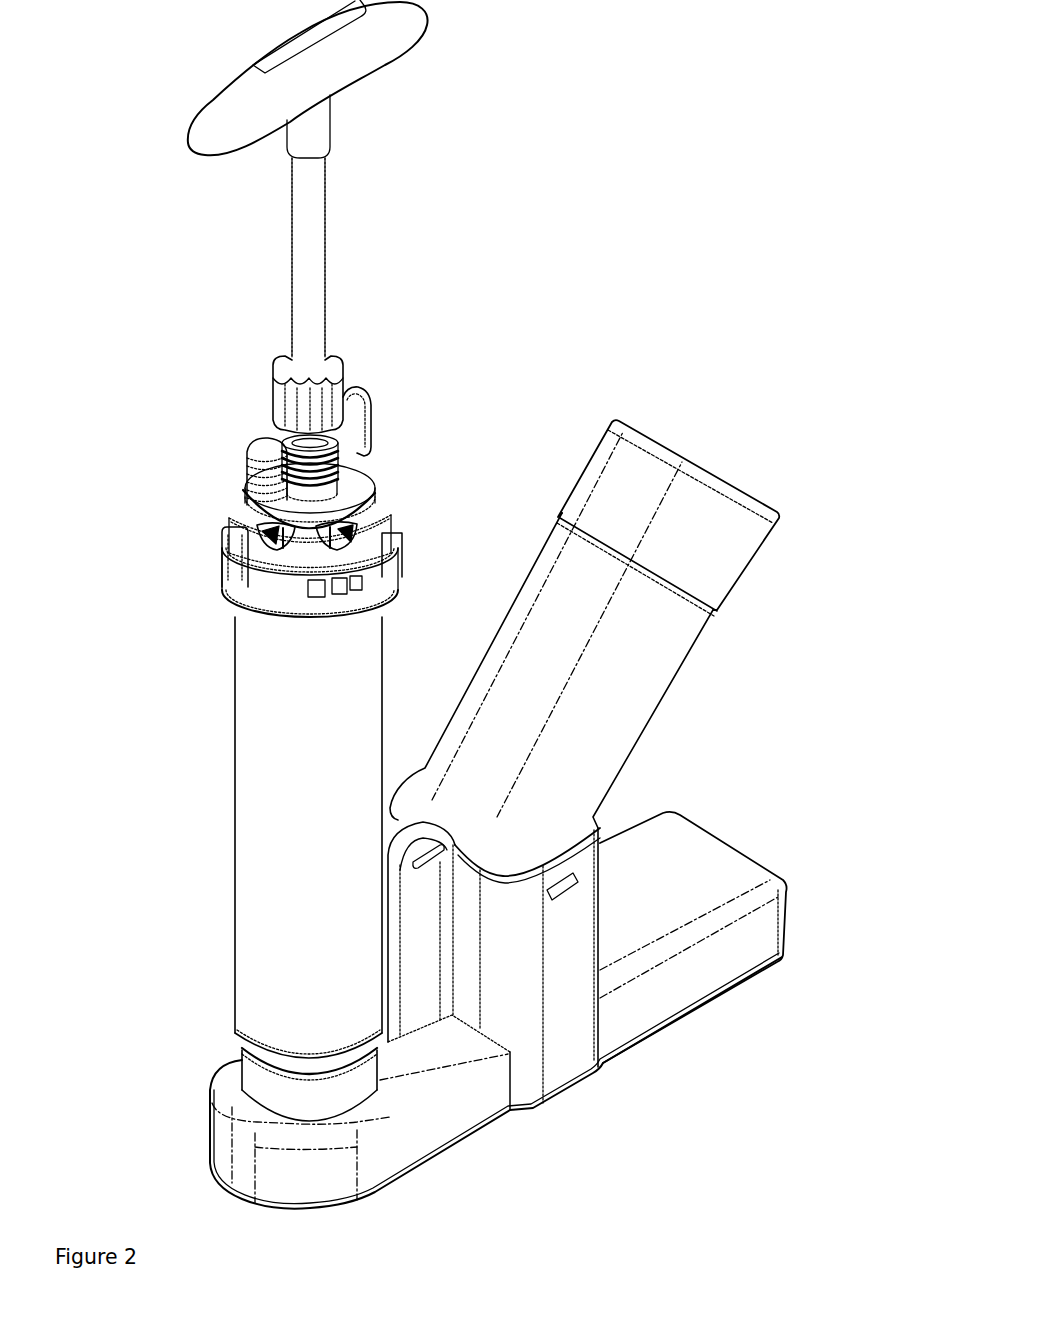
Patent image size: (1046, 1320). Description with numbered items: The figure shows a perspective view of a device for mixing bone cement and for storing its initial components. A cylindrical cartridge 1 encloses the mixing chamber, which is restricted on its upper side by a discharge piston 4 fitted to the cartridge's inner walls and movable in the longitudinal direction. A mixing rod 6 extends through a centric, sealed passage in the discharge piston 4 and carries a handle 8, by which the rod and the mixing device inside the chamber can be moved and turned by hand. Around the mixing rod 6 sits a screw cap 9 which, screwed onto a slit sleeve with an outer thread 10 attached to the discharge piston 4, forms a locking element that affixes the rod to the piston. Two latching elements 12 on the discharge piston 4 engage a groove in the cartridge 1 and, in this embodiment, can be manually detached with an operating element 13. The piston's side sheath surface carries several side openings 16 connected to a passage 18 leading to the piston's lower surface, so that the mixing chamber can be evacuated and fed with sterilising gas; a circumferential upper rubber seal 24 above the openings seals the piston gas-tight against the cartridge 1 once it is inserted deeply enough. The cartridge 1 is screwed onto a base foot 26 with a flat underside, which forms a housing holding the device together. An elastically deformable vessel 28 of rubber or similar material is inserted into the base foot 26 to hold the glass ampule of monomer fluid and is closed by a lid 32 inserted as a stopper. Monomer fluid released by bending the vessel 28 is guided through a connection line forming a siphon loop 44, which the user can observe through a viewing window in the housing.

The cartridge 1 is at (283, 713).
The discharge piston 4 is at (305, 557).
The mixing rod 6 is at (305, 248).
The handle 8 is at (232, 97).
The screw cap 9 is at (293, 401).
The sleeve with outer thread 10 is at (337, 463).
The latching elements 12 is at (257, 477).
The operating element 13 is at (365, 405).
The side openings 16 is at (263, 530).
The passage 18 is at (343, 531).
The upper rubber seal 24 is at (253, 492).
The base foot 26 is at (242, 1158).
The elastically deformable vessel 28 is at (603, 680).
The lid 32 is at (695, 463).
The loop 44 is at (423, 850).